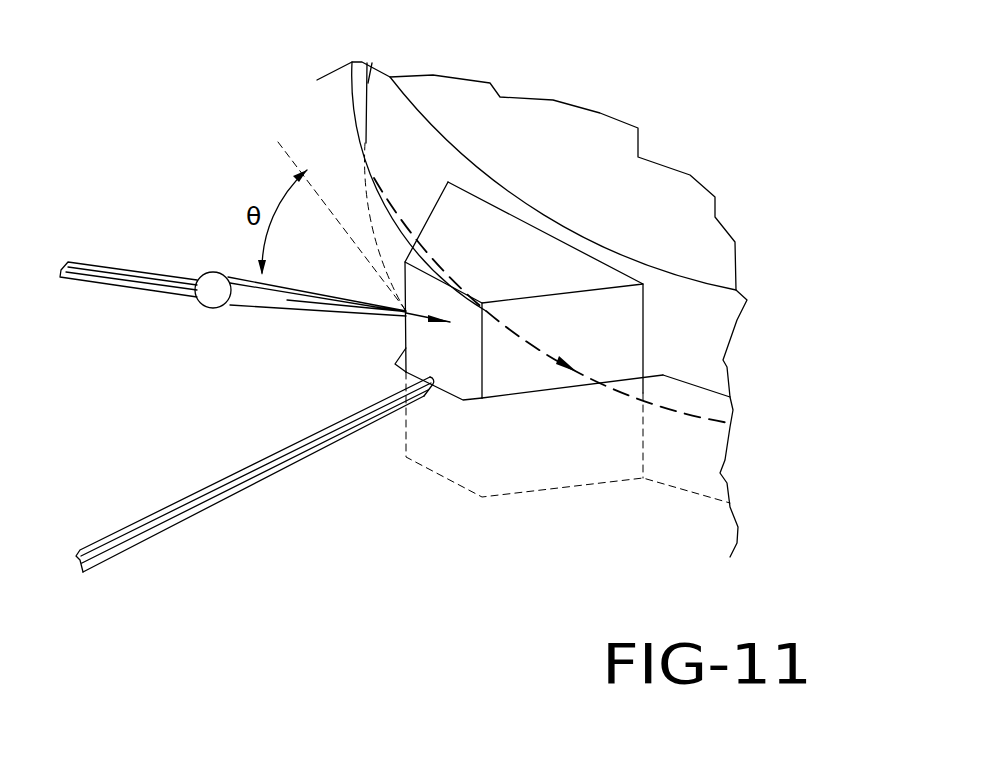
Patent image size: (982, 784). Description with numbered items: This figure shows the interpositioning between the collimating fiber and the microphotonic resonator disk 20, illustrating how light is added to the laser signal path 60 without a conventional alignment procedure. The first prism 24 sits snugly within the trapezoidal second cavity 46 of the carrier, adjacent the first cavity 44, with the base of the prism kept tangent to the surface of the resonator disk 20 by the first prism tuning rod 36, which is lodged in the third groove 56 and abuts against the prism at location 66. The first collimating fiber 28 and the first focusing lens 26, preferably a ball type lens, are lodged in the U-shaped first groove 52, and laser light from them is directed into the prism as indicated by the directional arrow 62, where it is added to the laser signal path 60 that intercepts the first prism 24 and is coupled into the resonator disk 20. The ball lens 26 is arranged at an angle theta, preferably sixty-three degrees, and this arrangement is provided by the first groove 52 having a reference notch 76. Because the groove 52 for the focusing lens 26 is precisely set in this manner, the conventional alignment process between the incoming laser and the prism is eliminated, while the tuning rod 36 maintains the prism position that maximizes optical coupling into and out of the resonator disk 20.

The resonator disk 20 is at (677, 230).
The first prism 24 is at (467, 227).
The first focusing lens 26 is at (213, 290).
The first collimating fiber 28 is at (123, 277).
The first prism tuning rod 36 is at (265, 463).
The first cavity 44 is at (695, 453).
The second cavity 46 is at (555, 448).
The first groove 52 is at (280, 318).
The third groove 56 is at (177, 523).
The laser signal path 60 is at (518, 333).
The directional arrow 62 is at (438, 325).
The abutment location 66 is at (428, 387).
The reference notch 76 is at (198, 300).